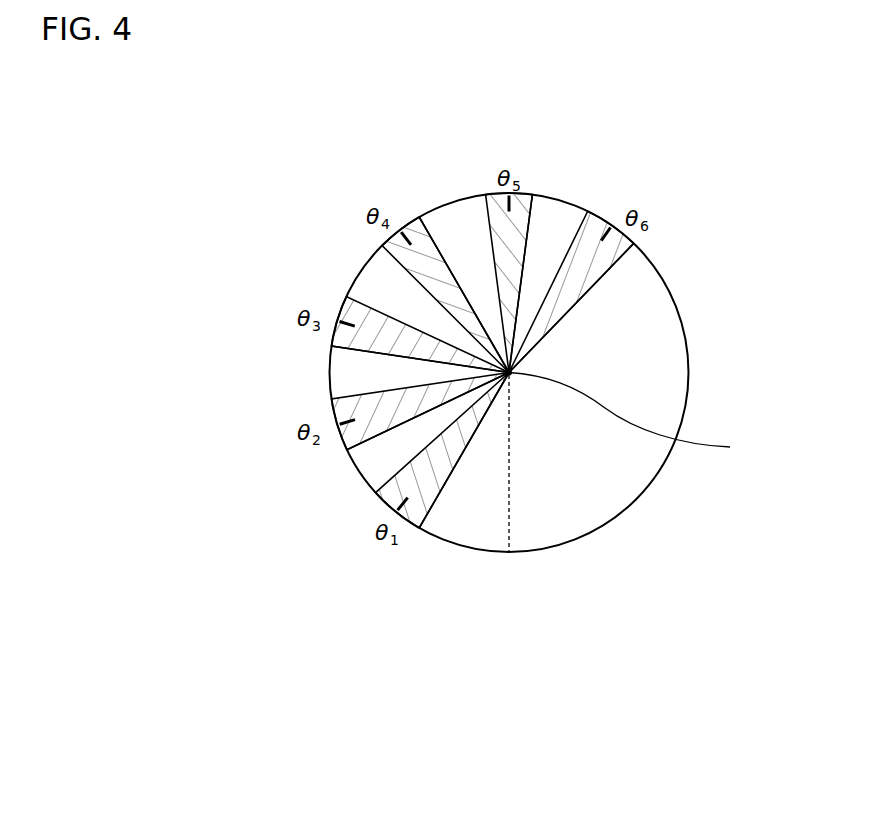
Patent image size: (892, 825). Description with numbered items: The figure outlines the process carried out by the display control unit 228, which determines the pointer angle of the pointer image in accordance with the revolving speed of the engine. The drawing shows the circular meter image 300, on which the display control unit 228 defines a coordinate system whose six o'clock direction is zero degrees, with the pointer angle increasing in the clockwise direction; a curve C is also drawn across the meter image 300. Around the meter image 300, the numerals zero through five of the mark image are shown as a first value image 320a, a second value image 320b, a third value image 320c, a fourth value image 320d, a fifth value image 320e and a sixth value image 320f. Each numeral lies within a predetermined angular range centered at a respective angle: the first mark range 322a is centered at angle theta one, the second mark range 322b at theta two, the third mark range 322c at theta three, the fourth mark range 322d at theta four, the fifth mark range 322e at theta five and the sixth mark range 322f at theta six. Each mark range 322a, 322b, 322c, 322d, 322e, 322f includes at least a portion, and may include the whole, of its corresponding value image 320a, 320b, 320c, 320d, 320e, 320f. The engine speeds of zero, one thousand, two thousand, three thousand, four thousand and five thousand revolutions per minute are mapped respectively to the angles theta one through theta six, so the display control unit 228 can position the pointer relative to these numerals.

The display control unit 228 is at (536, 708).
The meter image 300 is at (597, 553).
The curve C is at (631, 418).
The first value image 320a is at (375, 488).
The second value image 320b is at (345, 400).
The third value image 320c is at (342, 293).
The fourth value image 320d is at (426, 238).
The fifth value image 320e is at (576, 205).
The sixth value image 320f is at (588, 298).
The first mark range 322a is at (430, 517).
The second mark range 322b is at (396, 425).
The third mark range 322c is at (410, 354).
The fourth mark range 322d is at (418, 228).
The fifth mark range 322e is at (533, 198).
The sixth mark range 322f is at (622, 258).